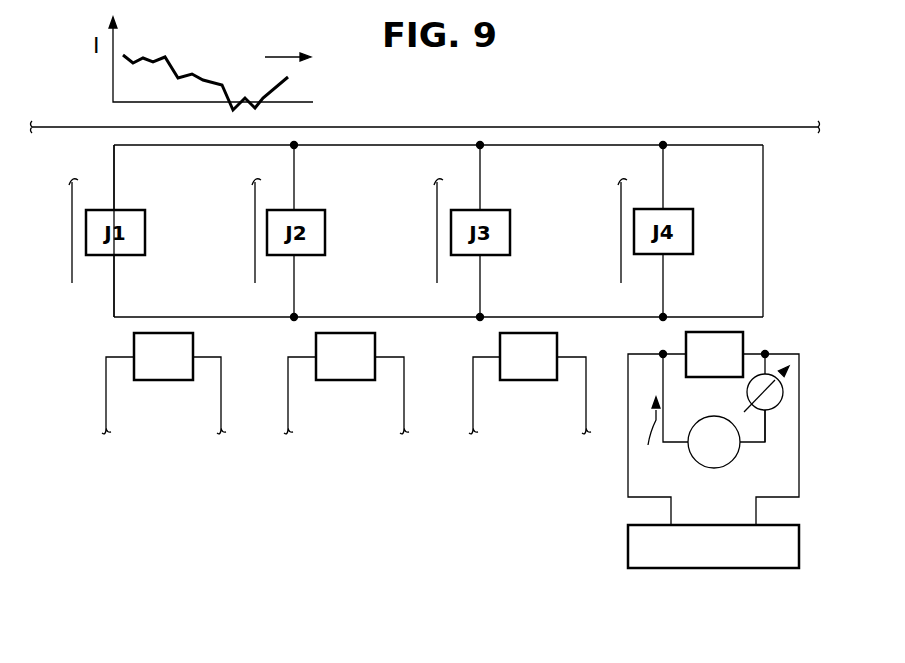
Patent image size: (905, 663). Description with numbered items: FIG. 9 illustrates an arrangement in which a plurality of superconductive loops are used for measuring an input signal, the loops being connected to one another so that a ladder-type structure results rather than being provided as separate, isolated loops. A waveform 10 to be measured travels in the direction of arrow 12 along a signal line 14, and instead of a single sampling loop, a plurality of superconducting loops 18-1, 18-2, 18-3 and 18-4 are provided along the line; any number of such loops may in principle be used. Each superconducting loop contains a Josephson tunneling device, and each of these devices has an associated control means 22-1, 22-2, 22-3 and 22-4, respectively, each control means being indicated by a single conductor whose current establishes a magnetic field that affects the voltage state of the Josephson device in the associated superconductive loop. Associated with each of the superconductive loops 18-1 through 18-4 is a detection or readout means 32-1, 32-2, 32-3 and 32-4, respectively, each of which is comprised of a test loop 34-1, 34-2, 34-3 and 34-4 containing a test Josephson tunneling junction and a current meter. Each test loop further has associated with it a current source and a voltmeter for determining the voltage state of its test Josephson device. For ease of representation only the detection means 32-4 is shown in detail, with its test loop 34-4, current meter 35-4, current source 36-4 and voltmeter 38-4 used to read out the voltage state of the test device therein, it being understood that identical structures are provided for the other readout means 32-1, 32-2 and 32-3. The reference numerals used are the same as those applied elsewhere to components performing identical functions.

The waveform 10 is at (175, 68).
The arrow 12 is at (282, 57).
The signal line 14 is at (592, 126).
The superconducting loop 18-1 is at (88, 320).
The superconducting loop 18-2 is at (432, 340).
The superconducting loop 18-3 is at (610, 330).
The superconducting loop 18-4 is at (785, 270).
The control means 22-1 is at (72, 231).
The control means 22-2 is at (255, 231).
The control means 22-3 is at (437, 231).
The control means 22-4 is at (621, 231).
The detection means 32-1 is at (140, 403).
The detection means 32-2 is at (322, 403).
The detection means 32-3 is at (505, 403).
The detection means 32-4 is at (695, 450).
The test loop 34-1 is at (205, 404).
The test loop 34-2 is at (386, 403).
The test loop 34-3 is at (569, 401).
The test loop 34-4 is at (781, 440).
The current meter 35-4 is at (783, 390).
The current source 36-4 is at (720, 406).
The voltmeter 38-4 is at (627, 546).